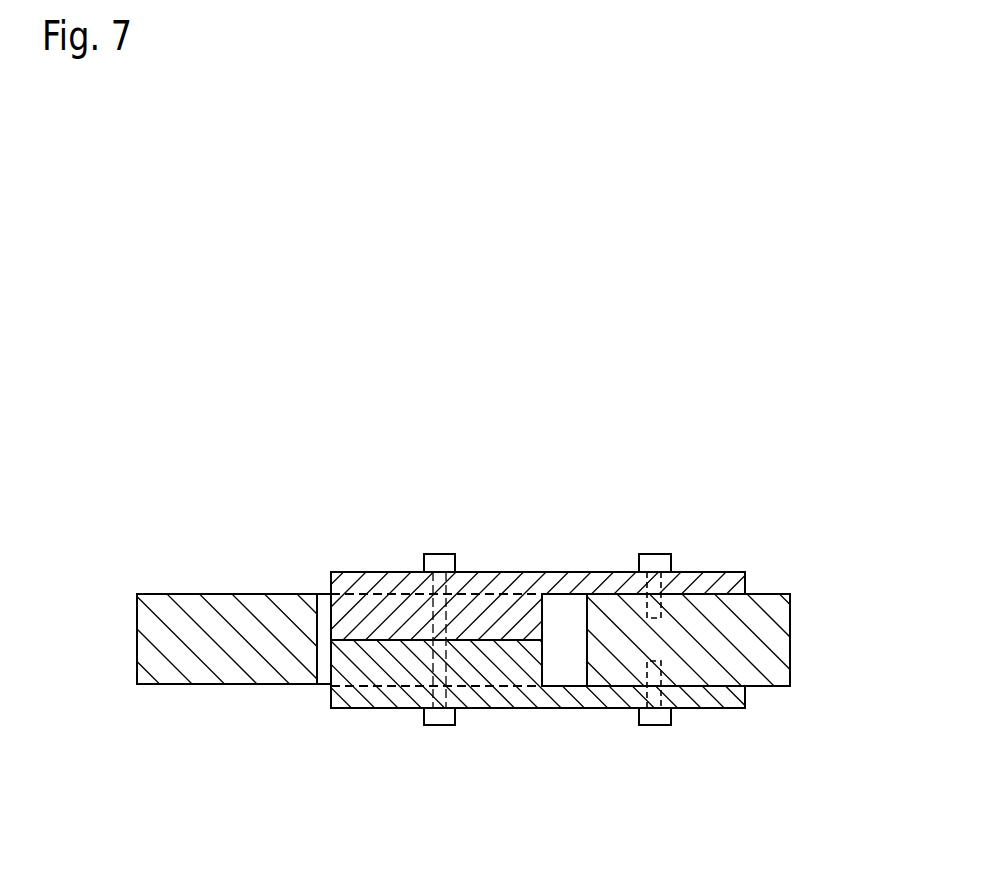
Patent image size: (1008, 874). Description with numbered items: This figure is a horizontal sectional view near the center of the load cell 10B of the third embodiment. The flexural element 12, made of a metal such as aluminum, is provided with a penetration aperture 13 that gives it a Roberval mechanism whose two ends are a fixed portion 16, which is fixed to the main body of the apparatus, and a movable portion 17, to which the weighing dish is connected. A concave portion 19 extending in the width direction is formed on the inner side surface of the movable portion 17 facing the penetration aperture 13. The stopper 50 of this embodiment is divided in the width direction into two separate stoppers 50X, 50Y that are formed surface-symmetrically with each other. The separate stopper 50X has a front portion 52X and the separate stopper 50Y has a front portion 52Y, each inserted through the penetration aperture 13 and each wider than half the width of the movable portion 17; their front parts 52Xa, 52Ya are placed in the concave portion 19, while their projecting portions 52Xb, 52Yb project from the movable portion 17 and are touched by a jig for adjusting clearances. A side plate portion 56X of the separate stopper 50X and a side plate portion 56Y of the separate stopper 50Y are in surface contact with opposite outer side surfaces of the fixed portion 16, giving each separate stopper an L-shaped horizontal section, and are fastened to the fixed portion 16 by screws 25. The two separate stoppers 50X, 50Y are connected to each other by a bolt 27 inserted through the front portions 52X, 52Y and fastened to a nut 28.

The load cell 10B is at (606, 498).
The flexural element 12 is at (765, 594).
The penetration aperture 13 is at (566, 612).
The fixed portion 16 is at (622, 617).
The movable portion 17 is at (198, 632).
The concave portion 19 is at (327, 607).
The screws 25 is at (653, 554).
The bolt 27 is at (437, 725).
The nut 28 is at (426, 554).
The stopper 50 is at (568, 481).
The separate stopper 50X is at (504, 636).
The separate stopper 50Y is at (485, 572).
The front portion 52X is at (390, 700).
The front part 52Xa is at (331, 668).
The projecting portion 52Xb is at (348, 708).
The front portion 52Y is at (383, 590).
The front part 52Ya is at (317, 617).
The projecting portion 52Yb is at (347, 572).
The side plate portion 56X is at (697, 708).
The side plate portion 56Y is at (712, 580).